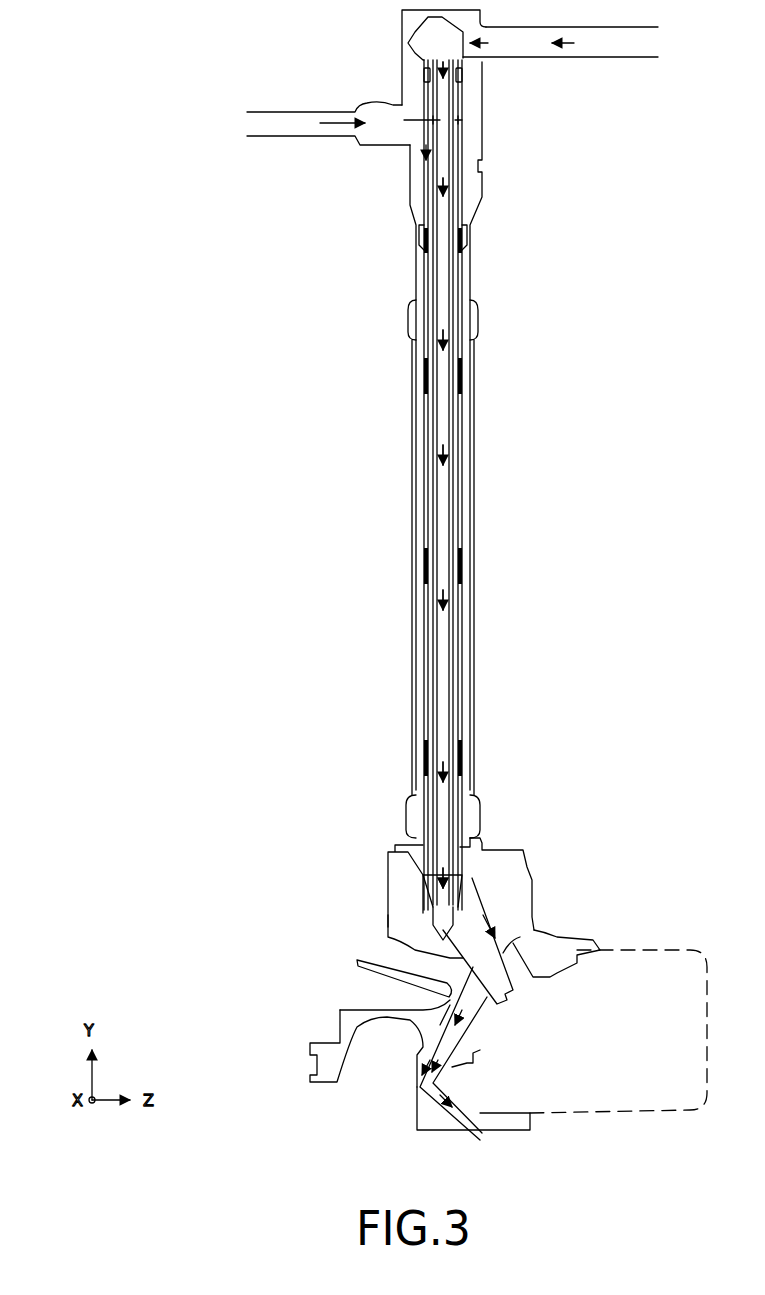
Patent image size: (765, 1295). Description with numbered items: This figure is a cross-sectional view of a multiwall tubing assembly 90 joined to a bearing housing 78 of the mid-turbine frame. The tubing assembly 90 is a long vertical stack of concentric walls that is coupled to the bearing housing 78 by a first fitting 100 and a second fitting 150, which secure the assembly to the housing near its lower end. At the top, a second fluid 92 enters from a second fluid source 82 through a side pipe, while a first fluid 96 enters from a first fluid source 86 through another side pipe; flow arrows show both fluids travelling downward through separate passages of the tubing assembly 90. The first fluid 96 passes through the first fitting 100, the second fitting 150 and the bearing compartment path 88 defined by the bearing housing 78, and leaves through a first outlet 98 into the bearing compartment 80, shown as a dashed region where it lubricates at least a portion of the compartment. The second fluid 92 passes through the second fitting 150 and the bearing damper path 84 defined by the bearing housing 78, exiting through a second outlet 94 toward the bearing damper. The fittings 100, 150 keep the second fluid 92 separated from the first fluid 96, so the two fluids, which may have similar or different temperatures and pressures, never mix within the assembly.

The multiwall tubing assembly 90 is at (118, 60).
The second fluid source 82 is at (660, 43).
The second fluid 92 is at (570, 48).
The first fluid source 86 is at (244, 123).
The first fluid 96 is at (333, 128).
The first fitting 100 is at (480, 833).
The second fitting 150 is at (425, 896).
The bearing damper path 84 is at (460, 962).
The bearing compartment path 88 is at (540, 935).
The first outlet 98 is at (515, 975).
The bearing housing 78 is at (555, 955).
The bearing compartment 80 is at (601, 1094).
The second outlet 94 is at (465, 1107).